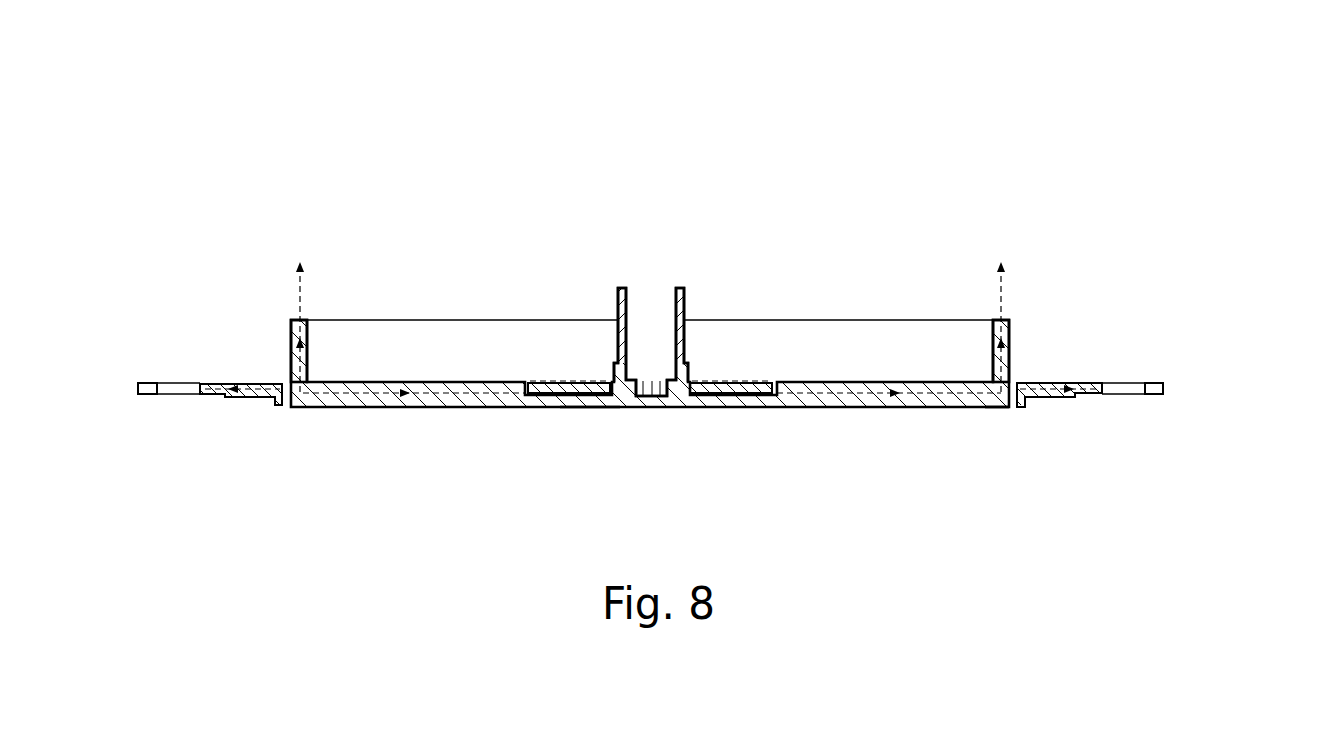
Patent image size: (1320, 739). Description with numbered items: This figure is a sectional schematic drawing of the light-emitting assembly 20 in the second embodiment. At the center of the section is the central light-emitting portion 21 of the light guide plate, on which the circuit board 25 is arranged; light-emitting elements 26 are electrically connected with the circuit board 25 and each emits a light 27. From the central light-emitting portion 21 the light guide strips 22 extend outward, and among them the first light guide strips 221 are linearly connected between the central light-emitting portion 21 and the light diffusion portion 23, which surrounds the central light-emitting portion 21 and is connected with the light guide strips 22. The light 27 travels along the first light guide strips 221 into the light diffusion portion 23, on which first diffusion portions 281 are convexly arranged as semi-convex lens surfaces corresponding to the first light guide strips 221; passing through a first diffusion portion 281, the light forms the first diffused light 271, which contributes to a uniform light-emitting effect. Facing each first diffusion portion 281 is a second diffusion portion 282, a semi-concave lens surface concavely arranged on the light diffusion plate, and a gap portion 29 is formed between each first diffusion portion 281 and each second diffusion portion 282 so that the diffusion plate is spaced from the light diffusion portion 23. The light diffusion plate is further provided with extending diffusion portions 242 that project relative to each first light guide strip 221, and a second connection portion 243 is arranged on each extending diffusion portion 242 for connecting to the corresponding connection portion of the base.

The light-emitting assembly 20 is at (1215, 88).
The central light-emitting portion 21 is at (671, 407).
The light guide strips 22 is at (365, 412).
The first light guide strips 221 is at (770, 407).
The light diffusion portion 23 is at (993, 330).
The extending diffusion portions 242 is at (1165, 388).
The second connection portion 243 is at (1117, 390).
The circuit board 25 is at (585, 407).
The light-emitting elements 26 is at (507, 398).
The light 27 is at (853, 383).
The first diffused light 271 is at (1043, 383).
The first diffusion portions 281 is at (292, 350).
The second diffusion portion 282 is at (1003, 408).
The gap portion 29 is at (277, 407).